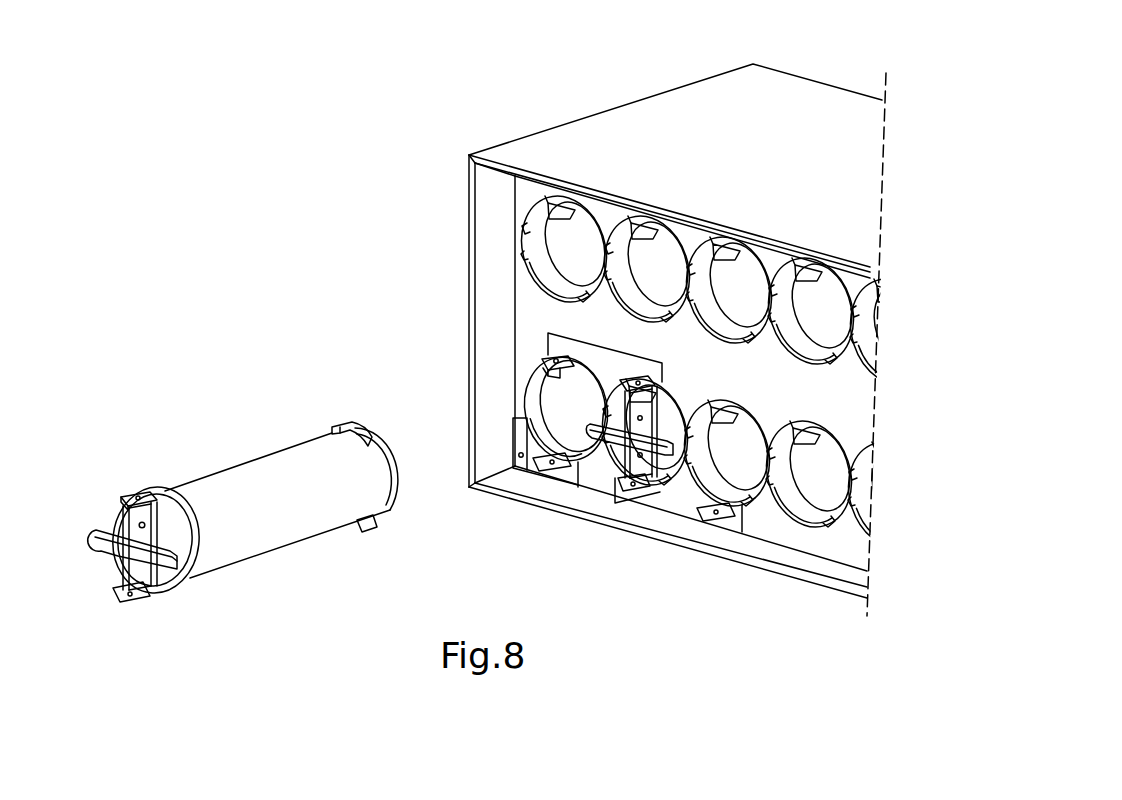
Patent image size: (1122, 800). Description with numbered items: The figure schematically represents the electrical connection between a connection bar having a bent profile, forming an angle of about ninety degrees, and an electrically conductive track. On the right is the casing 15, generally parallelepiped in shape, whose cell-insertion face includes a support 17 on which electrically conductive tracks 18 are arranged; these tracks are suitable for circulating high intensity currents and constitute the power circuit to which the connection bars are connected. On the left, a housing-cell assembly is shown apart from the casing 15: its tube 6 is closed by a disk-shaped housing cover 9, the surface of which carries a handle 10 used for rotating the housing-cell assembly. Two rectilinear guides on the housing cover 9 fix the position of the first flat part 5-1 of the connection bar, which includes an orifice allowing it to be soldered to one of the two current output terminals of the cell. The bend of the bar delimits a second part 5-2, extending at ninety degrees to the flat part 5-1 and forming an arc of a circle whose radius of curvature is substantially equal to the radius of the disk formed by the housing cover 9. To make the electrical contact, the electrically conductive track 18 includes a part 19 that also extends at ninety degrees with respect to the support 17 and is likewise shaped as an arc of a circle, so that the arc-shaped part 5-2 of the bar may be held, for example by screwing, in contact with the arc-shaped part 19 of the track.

The casing 15 is at (623, 100).
The support 17 is at (764, 537).
The electrically conductive track 18 is at (572, 352).
The part of the electrically conductive track 19 is at (529, 354).
The tube 6 is at (287, 552).
The housing cover 9 is at (186, 590).
The handle 10 is at (86, 551).
The flat part of the connection bar 5-1 is at (115, 514).
The arc-shaped part of the connection bar 5-2 is at (129, 485).